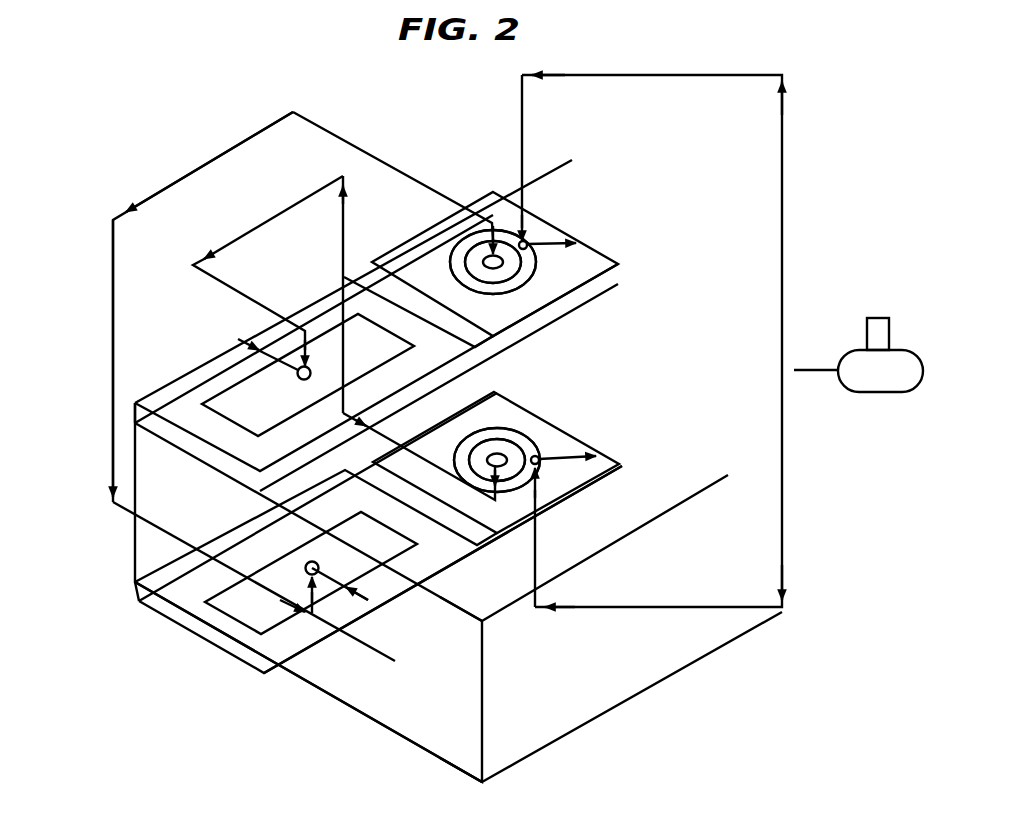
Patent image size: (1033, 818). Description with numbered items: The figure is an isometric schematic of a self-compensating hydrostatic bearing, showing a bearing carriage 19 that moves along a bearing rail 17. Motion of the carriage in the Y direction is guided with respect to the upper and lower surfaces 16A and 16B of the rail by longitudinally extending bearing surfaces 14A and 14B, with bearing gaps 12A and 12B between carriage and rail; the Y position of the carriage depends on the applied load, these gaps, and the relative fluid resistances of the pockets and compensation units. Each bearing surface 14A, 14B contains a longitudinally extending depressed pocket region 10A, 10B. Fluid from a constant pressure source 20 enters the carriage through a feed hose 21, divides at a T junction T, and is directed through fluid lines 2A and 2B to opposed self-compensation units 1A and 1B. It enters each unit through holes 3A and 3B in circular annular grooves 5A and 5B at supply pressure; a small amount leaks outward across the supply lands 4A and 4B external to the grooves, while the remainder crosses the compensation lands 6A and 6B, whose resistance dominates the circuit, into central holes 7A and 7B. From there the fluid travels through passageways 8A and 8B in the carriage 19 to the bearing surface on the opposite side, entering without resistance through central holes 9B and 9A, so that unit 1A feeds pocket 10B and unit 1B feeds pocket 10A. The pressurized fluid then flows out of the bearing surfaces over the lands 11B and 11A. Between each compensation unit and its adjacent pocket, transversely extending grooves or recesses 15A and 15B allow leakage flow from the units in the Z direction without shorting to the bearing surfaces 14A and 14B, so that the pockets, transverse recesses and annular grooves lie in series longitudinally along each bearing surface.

The bearing carriage 19 is at (158, 168).
The bearing rail 17 is at (318, 706).
The bearing surface 14A is at (302, 299).
The transversely extending groove 15A is at (388, 290).
The bearing gap 12A is at (132, 415).
The self-compensation unit 1A is at (493, 186).
The central hole 7A is at (501, 266).
The circular annular groove 5A is at (533, 262).
The compensation land 6A is at (530, 278).
The passageway 8A is at (405, 173).
The fluid line 2A is at (524, 143).
The hole 3A is at (527, 242).
The supply land 4A is at (548, 243).
The depressed pocket region 10A is at (267, 372).
The central hole 9A is at (297, 376).
The land 11A is at (256, 348).
The passageway 8B is at (296, 207).
The bearing gap 12B is at (138, 598).
The bearing surface 14B is at (236, 668).
The transversely extending groove 15B is at (486, 547).
The self-compensation unit 1B is at (511, 546).
The central hole 7B is at (511, 452).
The compensation land 6B is at (530, 446).
The circular annular groove 5B is at (541, 452).
The supply land 4B is at (566, 455).
The hole 3B is at (541, 462).
The fluid line 2B is at (537, 534).
The depressed pocket region 10B is at (236, 612).
The central hole 9B is at (300, 563).
The land 11B is at (350, 592).
The upper surface of bearing rail 16A is at (462, 612).
The lower surface of bearing rail 16B is at (462, 764).
The T junction T is at (652, 341).
The constant pressure source 20 is at (884, 396).
The feed hose 21 is at (830, 352).